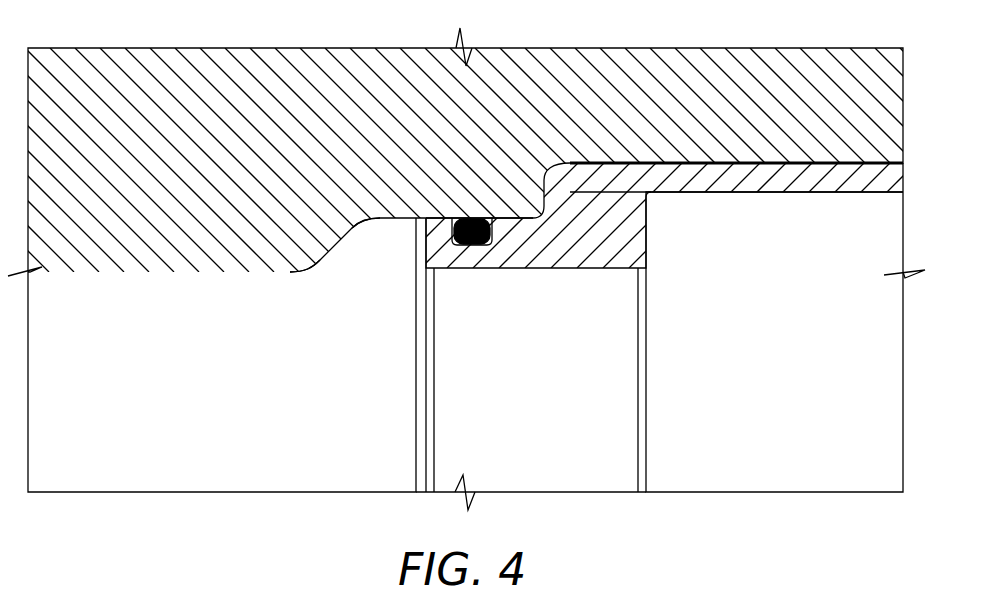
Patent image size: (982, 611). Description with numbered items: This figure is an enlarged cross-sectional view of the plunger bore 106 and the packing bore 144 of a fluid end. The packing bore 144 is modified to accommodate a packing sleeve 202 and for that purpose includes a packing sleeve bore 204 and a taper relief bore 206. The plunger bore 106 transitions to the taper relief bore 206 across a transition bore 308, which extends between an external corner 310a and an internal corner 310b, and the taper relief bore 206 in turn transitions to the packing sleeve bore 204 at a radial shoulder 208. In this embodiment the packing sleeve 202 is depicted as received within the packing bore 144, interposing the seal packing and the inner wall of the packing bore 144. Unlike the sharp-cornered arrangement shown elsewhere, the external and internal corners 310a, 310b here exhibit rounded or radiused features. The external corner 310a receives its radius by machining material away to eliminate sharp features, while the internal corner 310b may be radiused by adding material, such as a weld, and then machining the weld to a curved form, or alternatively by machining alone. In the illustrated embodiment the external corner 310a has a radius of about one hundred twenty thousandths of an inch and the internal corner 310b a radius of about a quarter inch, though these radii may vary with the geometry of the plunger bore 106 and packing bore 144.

The plunger bore 106 is at (127, 268).
The packing bore 144 is at (840, 158).
The packing sleeve 202 is at (621, 156).
The packing sleeve bore 204 is at (724, 158).
The taper relief bore 206 is at (412, 213).
The radial shoulder 208 is at (556, 208).
The transition bore 308 is at (338, 242).
The external corner 310a is at (306, 273).
The internal corner 310b is at (358, 218).